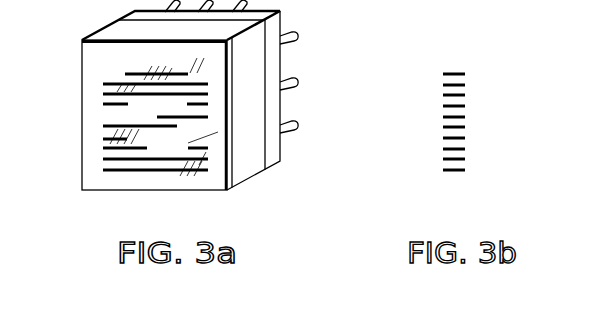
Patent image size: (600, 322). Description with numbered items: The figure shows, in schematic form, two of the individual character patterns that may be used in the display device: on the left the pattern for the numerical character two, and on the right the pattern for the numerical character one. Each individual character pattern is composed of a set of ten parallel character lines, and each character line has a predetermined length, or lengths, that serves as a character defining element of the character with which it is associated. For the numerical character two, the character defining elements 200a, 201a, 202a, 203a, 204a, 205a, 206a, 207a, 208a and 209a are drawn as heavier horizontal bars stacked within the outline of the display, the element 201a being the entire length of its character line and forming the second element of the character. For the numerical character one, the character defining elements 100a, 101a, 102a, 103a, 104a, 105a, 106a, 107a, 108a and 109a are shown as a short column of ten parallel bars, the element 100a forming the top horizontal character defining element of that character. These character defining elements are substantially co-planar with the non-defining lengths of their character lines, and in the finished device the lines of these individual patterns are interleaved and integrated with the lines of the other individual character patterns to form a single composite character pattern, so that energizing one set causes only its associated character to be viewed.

In FIG. 3B, the character defining element 100a is at (465, 74).
In FIG. 3B, the character defining element 101a is at (443, 85).
In FIG. 3B, the character defining element 102a is at (465, 95).
In FIG. 3B, the character defining element 103a is at (443, 106).
In FIG. 3B, the character defining element 104a is at (465, 117).
In FIG. 3B, the character defining element 105a is at (443, 127).
In FIG. 3B, the character defining element 106a is at (465, 138).
In FIG. 3B, the character defining element 107a is at (443, 149).
In FIG. 3B, the character defining element 108a is at (465, 159).
In FIG. 3B, the character defining element 109a is at (443, 170).
In FIG. 3A, the character defining element 200a is at (137, 72).
In FIG. 3A, the character defining element 201a is at (103, 84).
In FIG. 3A, the character defining element 202a is at (208, 93).
In FIG. 3A, the character defining element 203a is at (187, 104).
In FIG. 3A, the character defining element 204a is at (208, 117).
In FIG. 3A, the character defining element 205a is at (103, 126).
In FIG. 3A, the character defining element 206a is at (103, 139).
In FIG. 3A, the character defining element 207a is at (193, 148).
In FIG. 3A, the character defining element 208a is at (103, 159).
In FIG. 3A, the character defining element 209a is at (123, 172).